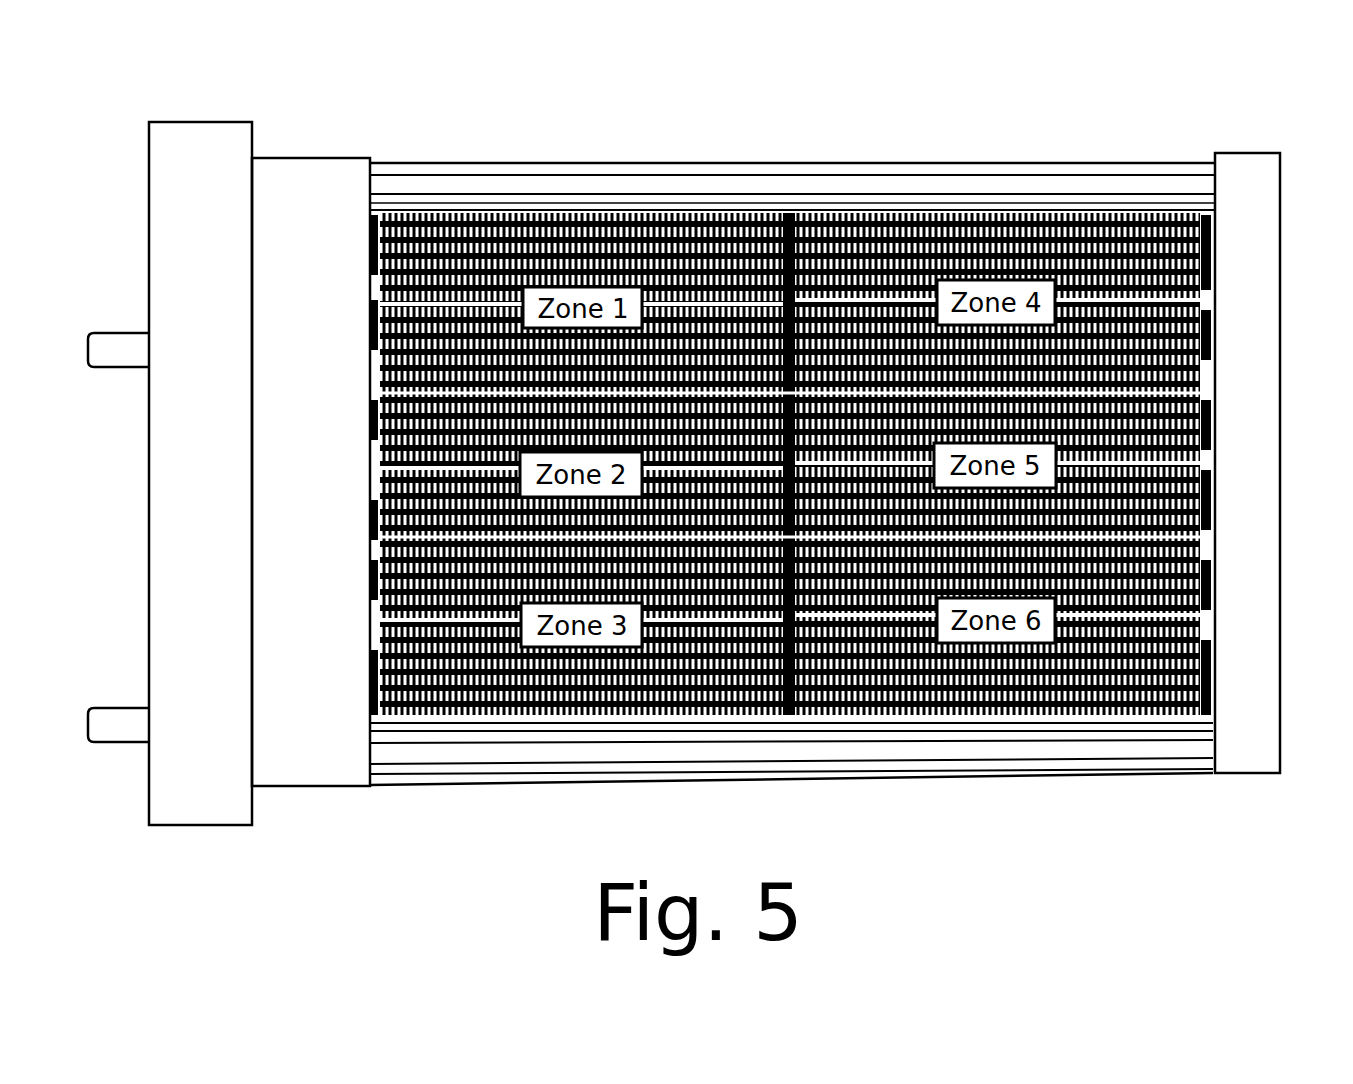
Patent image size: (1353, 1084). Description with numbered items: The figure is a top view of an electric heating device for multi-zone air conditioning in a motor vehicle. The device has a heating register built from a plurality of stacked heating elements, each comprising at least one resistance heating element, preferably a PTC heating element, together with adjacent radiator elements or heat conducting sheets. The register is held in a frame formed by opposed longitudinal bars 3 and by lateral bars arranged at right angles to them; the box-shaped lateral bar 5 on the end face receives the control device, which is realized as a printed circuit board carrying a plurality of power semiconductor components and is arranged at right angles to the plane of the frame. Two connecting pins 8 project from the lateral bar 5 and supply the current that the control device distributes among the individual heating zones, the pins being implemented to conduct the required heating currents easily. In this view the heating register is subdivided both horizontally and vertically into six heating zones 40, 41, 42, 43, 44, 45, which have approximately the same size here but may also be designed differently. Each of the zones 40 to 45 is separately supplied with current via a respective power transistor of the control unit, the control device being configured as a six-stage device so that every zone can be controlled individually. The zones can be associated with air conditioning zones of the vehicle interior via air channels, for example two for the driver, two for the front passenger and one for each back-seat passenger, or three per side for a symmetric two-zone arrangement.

The longitudinal bar 3 is at (563, 185).
The lateral bar 5 is at (213, 170).
The connecting pin 8 is at (105, 343).
The heating zone 40 is at (430, 213).
The heating zone 41 is at (365, 427).
The heating zone 42 is at (458, 717).
The heating zone 43 is at (882, 212).
The heating zone 44 is at (1205, 483).
The heating zone 45 is at (1060, 715).